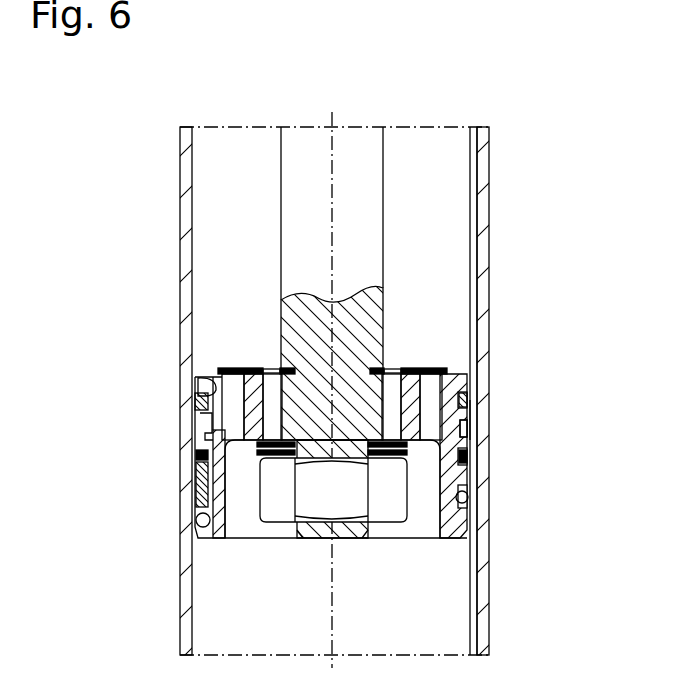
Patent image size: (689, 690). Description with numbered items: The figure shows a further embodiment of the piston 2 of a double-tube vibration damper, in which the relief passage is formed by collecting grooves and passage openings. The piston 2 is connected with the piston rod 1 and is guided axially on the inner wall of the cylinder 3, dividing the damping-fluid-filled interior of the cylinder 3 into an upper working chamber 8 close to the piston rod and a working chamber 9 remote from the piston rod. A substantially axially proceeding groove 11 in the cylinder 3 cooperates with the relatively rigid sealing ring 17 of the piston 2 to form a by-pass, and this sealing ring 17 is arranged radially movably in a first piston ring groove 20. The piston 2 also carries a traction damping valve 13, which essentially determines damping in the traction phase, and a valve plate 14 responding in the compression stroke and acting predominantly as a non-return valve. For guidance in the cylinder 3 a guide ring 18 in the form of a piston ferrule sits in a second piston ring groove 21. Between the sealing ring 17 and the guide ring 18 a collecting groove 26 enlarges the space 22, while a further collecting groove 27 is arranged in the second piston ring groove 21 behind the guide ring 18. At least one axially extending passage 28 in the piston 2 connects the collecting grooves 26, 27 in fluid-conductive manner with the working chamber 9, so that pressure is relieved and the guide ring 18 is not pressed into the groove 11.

The piston rod 1 is at (372, 160).
The piston 2 is at (465, 395).
The cylinder 3 is at (485, 232).
The upper working chamber 8 is at (448, 178).
The working chamber remote from the piston rod 9 is at (225, 567).
The axially proceeding groove 11 is at (475, 275).
The traction damping valve 13 is at (405, 452).
The valve plate 14 is at (440, 368).
The sealing ring 17 is at (195, 397).
The guide ring 18 is at (203, 455).
The first piston ring groove 20 is at (195, 378).
The second piston ring groove 21 is at (205, 520).
The space 22 is at (470, 440).
The collecting groove 26 is at (478, 420).
The further collecting groove 27 is at (462, 462).
The axially extending passage 28 is at (208, 482).